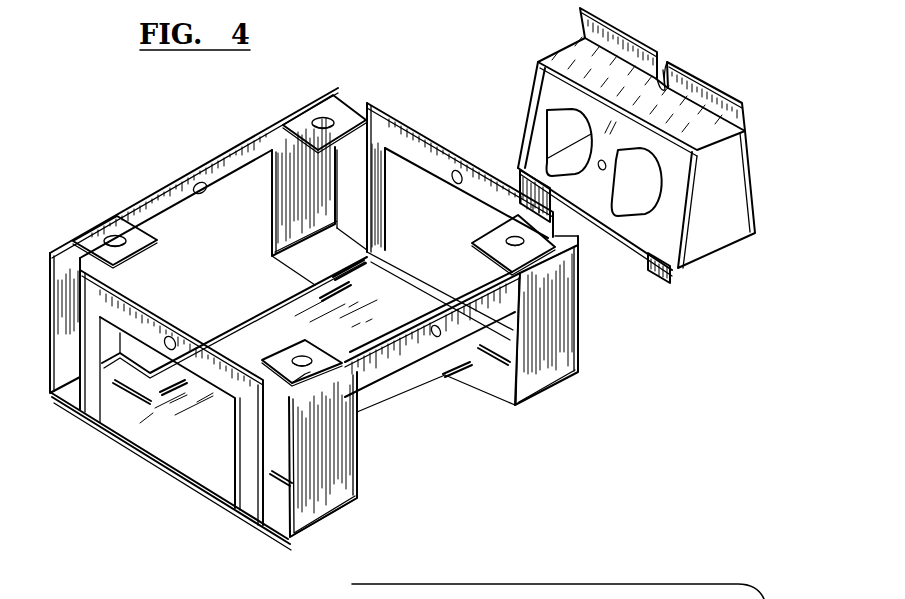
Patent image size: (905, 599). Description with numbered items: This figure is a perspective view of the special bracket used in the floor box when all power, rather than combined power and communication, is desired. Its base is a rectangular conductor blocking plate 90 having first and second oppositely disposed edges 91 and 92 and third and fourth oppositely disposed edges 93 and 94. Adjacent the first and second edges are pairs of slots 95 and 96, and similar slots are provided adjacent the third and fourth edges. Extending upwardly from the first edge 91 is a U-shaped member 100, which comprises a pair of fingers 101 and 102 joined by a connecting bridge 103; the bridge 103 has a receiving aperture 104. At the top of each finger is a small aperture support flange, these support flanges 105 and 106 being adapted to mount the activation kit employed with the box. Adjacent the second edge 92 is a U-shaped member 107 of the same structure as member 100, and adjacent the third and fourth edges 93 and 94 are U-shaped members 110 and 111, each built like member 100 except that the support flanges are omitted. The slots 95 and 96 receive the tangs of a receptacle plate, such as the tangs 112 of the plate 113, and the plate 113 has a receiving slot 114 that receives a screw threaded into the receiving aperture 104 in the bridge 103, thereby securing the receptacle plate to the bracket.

The conductor blocking plate 90 is at (372, 272).
The first edge 91 is at (313, 510).
The second edge 92 is at (243, 343).
The third edge 93 is at (455, 373).
The fourth edge 94 is at (183, 488).
The slot 95 is at (509, 365).
The slot 96 is at (368, 268).
The U-shaped member 100 is at (413, 347).
The finger 101 is at (560, 310).
The finger 102 is at (315, 505).
The connecting bridge 103 is at (525, 277).
The receiving aperture 104 is at (431, 332).
The support flange 105 is at (310, 372).
The support flange 106 is at (553, 232).
The U-shaped member 107 is at (170, 190).
The U-shaped member 110 is at (426, 140).
The U-shaped member 111 is at (87, 352).
The tang 112 is at (527, 190).
The receptacle plate 113 is at (693, 123).
The receiving slot 114 is at (660, 58).